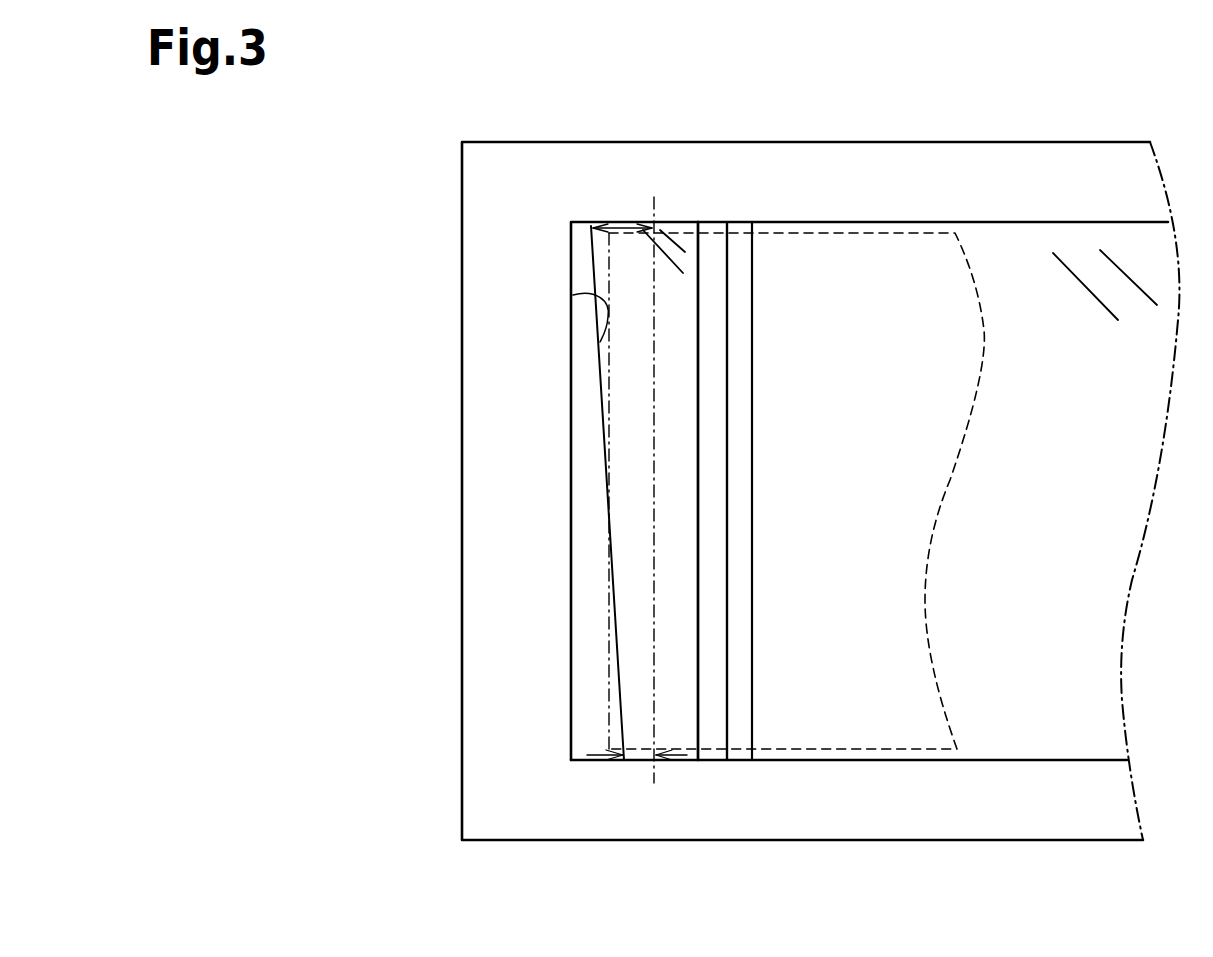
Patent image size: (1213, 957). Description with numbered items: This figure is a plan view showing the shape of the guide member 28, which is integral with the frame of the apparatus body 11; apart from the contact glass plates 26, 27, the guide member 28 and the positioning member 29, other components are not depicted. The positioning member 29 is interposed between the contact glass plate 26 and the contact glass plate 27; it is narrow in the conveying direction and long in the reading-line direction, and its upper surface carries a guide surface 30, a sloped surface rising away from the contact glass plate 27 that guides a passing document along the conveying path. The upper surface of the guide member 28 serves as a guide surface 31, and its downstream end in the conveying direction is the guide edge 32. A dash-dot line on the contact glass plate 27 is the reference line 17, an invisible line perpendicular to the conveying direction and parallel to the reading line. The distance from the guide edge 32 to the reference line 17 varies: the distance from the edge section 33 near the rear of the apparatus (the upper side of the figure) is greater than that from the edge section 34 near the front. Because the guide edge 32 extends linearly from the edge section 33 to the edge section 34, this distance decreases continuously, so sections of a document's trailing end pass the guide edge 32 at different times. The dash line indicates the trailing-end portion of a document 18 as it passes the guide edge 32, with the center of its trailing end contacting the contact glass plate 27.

The apparatus body 11 is at (430, 828).
The reference line 17 is at (657, 766).
The document 18 is at (852, 762).
The contact glass plate 26 is at (1002, 243).
The contact glass plate 27 is at (672, 224).
The guide member 28 is at (567, 505).
The positioning member 29 is at (740, 213).
The guide surface 30 is at (710, 224).
The guide surface 31 is at (587, 657).
The guide edge 32 is at (573, 295).
The edge section 33 is at (593, 228).
The edge section 34 is at (623, 761).